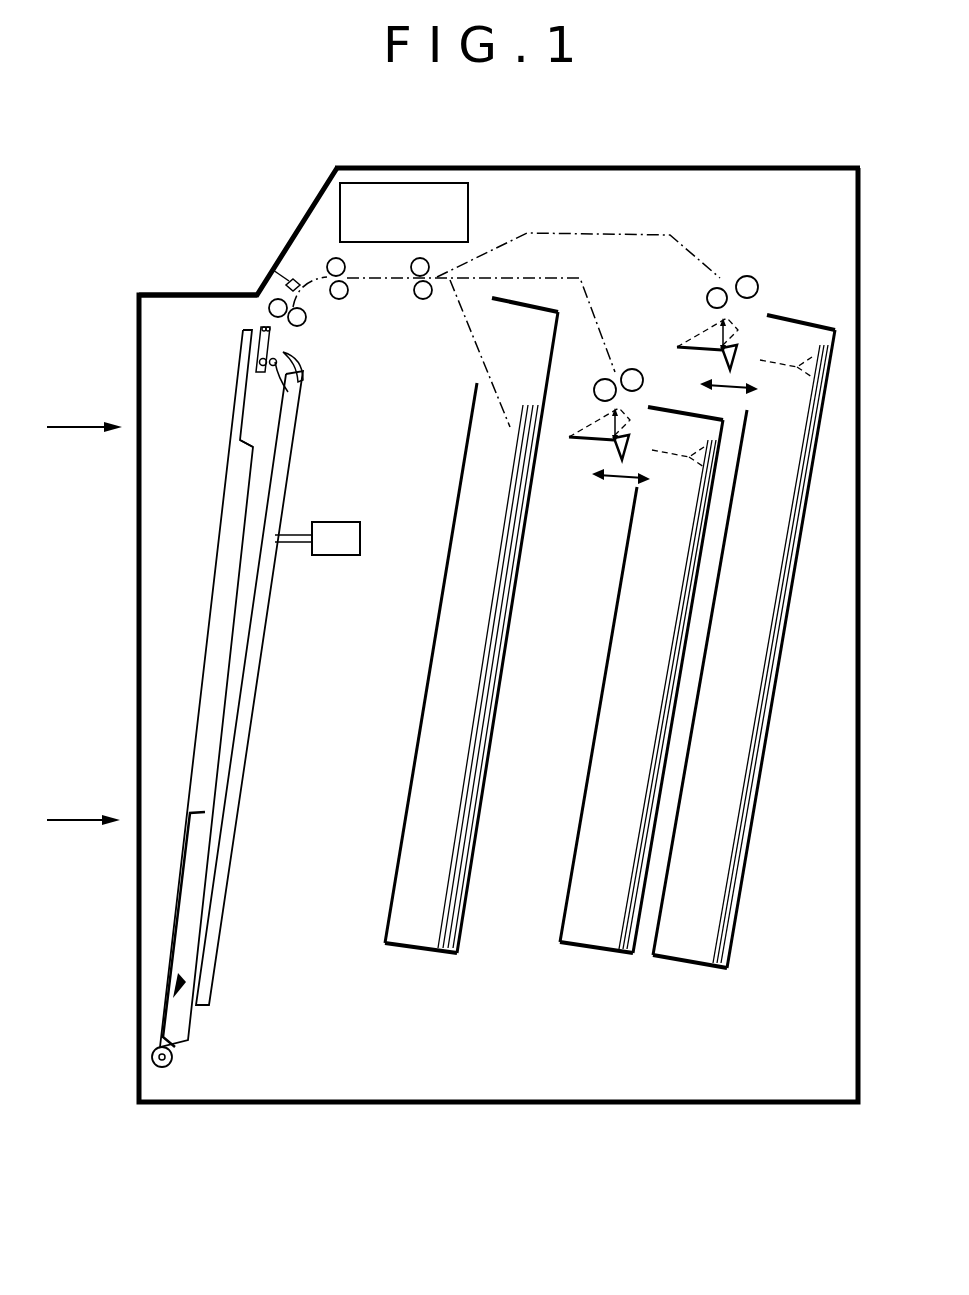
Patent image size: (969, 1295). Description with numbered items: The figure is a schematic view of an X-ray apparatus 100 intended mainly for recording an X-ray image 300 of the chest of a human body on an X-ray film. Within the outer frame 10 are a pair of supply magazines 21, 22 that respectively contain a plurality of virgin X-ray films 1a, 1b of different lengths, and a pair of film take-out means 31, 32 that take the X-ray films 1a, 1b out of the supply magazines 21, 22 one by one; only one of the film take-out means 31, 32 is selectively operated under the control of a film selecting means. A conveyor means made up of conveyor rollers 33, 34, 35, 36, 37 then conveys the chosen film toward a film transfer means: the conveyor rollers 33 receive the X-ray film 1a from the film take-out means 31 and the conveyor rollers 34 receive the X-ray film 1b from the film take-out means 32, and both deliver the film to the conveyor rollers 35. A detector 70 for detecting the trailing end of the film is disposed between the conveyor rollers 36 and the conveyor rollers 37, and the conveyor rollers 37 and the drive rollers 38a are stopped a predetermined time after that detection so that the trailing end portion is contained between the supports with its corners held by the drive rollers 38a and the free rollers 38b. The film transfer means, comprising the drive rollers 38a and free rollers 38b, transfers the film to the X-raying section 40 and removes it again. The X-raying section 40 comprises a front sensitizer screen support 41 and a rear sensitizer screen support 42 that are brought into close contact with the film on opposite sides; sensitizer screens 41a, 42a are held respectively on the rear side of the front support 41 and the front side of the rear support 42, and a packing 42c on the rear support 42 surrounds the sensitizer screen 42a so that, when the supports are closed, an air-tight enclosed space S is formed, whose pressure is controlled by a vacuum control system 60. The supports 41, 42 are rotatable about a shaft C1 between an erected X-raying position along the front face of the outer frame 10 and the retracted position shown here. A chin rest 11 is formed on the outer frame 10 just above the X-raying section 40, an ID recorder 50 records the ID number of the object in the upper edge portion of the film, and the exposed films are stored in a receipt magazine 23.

The X-ray apparatus 100 is at (725, 150).
The outer frame 10 is at (627, 166).
The chin rest 11 is at (180, 293).
The ID recorder 50 is at (409, 195).
The detector 70 is at (279, 276).
The conveyor rollers 36 is at (348, 292).
The conveyor rollers 35 is at (424, 300).
The conveyor rollers 37 is at (305, 325).
The conveyor rollers 34 is at (706, 292).
The conveyor rollers 33 is at (595, 388).
The film take-out means 32 is at (700, 355).
The film take-out means 31 is at (590, 445).
The receipt magazine 23 is at (403, 946).
The supply magazine 21 is at (631, 705).
The supply magazine 22 is at (741, 660).
The virgin X-ray films 1a is at (643, 812).
The virgin X-ray films 1b is at (740, 818).
The X-raying section 40 is at (230, 322).
The front sensitizer screen support 41 is at (206, 688).
The sensitizer screen 41a is at (240, 420).
The rear sensitizer screen support 42 is at (294, 678).
The sensitizer screen 42a is at (300, 422).
The packing 42c is at (305, 358).
The drive rollers 38a is at (292, 388).
The free rollers 38b is at (256, 366).
The vacuum control system 60 is at (339, 548).
The enclosed space S is at (205, 828).
The shaft C1 is at (172, 1057).
The X-ray image 300 is at (82, 426).